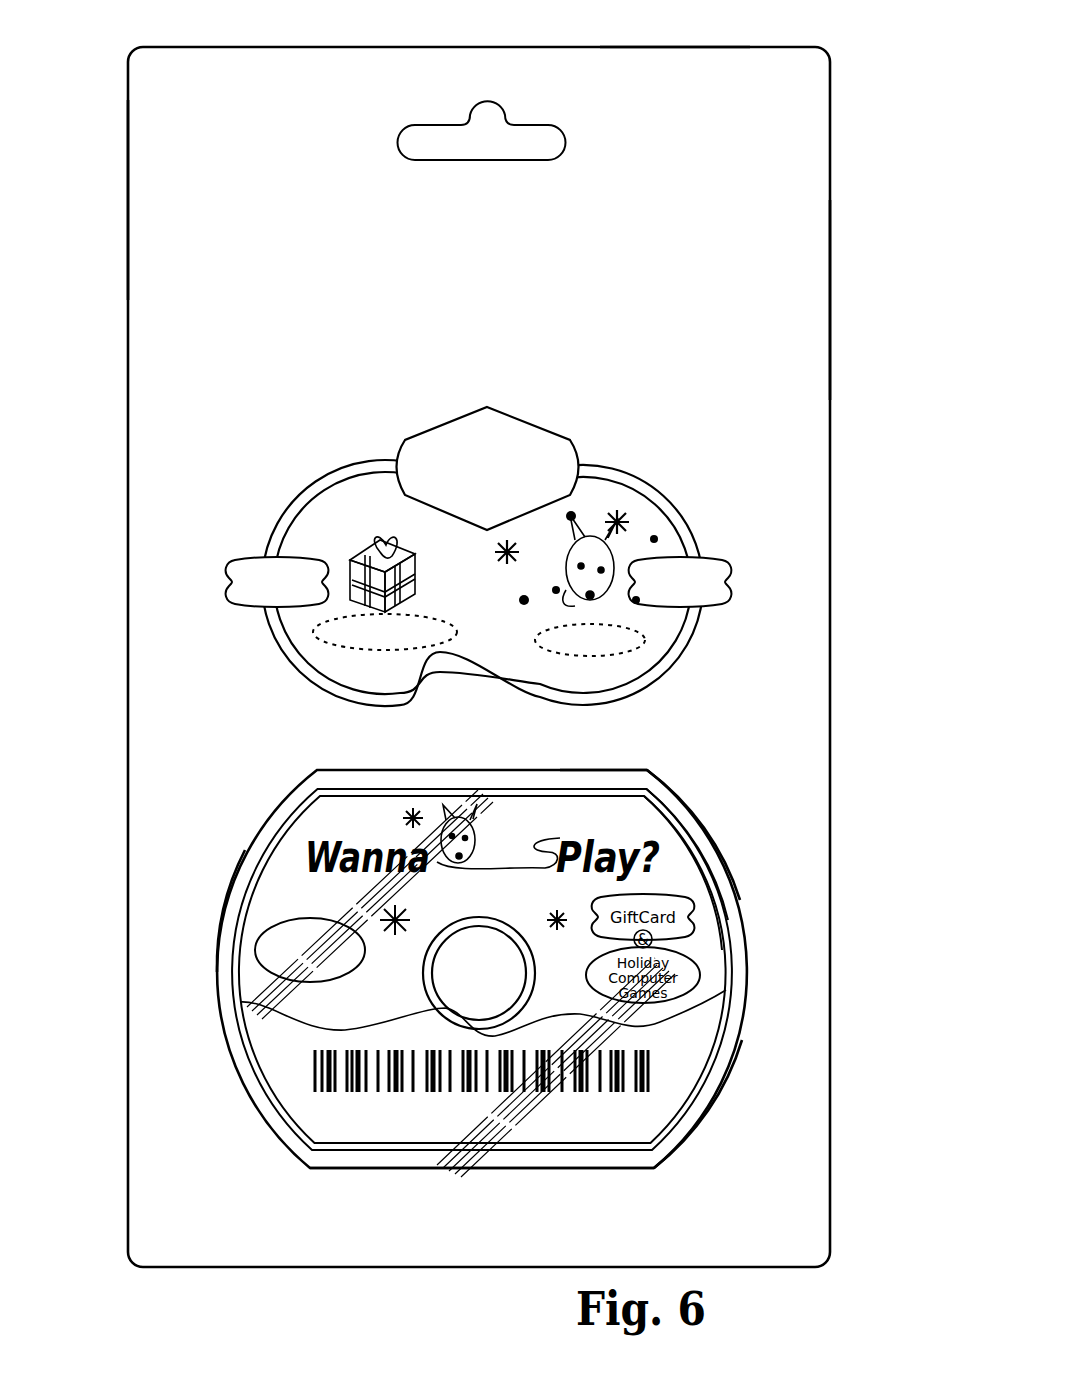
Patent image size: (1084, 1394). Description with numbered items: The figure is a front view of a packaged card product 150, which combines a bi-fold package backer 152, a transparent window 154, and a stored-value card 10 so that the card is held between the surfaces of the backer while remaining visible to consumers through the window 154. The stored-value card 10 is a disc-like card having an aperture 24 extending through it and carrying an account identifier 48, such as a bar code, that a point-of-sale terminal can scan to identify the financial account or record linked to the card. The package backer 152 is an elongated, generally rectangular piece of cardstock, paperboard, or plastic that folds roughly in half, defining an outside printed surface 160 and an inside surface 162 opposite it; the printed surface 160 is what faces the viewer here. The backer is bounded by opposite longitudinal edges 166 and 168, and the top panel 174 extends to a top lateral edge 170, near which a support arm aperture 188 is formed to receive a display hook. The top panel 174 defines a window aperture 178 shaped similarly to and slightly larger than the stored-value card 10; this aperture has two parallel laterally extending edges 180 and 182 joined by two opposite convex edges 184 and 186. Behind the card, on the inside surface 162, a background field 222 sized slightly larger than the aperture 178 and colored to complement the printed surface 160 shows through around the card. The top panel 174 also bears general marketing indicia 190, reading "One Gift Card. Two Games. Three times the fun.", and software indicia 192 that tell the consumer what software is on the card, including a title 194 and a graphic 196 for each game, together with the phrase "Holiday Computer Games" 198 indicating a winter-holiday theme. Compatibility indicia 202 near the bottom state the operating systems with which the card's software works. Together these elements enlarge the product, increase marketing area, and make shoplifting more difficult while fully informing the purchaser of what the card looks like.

The stored-value card 10 is at (680, 1066).
The aperture 24 is at (500, 988).
The account identifier 48 is at (348, 1090).
The packaged card product 150 is at (866, 81).
The bi-fold package backer 152 is at (484, 538).
The window 154 is at (712, 877).
The printed surface 160 is at (160, 428).
The inside surface 162 is at (693, 1107).
The longitudinal edge 166 is at (128, 148).
The longitudinal edge 168 is at (830, 122).
The top lateral edge 170 is at (676, 47).
The top panel 174 is at (778, 692).
The aperture 178 is at (703, 836).
The laterally extending edge 180 is at (622, 770).
The laterally extending edge 182 is at (645, 1168).
The convex edge 184 is at (206, 972).
The convex edge 186 is at (740, 917).
The support arm aperture 188 is at (492, 112).
The general marketing indicia 190 is at (664, 181).
The software indicia 192 is at (244, 613).
The title 194 is at (333, 652).
The graphic 196 is at (375, 560).
The "Holiday Computer Games" phrase 198 is at (412, 446).
The compatibility indicia 202 is at (830, 1238).
The background field 222 is at (256, 860).